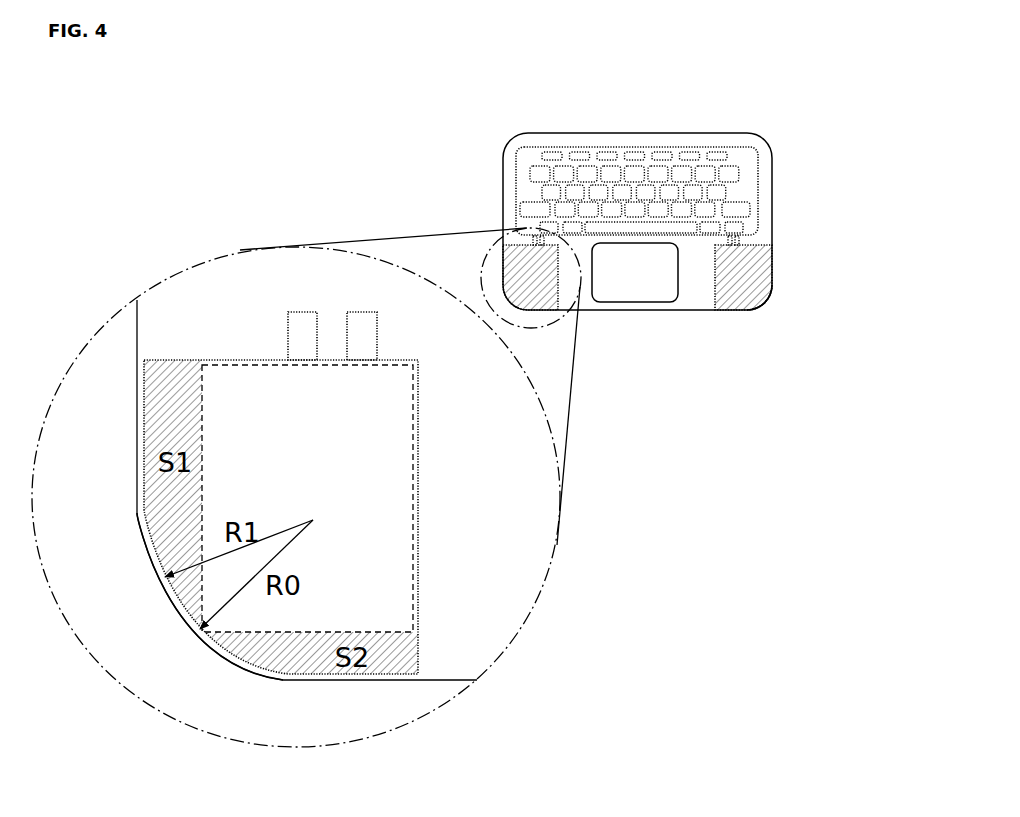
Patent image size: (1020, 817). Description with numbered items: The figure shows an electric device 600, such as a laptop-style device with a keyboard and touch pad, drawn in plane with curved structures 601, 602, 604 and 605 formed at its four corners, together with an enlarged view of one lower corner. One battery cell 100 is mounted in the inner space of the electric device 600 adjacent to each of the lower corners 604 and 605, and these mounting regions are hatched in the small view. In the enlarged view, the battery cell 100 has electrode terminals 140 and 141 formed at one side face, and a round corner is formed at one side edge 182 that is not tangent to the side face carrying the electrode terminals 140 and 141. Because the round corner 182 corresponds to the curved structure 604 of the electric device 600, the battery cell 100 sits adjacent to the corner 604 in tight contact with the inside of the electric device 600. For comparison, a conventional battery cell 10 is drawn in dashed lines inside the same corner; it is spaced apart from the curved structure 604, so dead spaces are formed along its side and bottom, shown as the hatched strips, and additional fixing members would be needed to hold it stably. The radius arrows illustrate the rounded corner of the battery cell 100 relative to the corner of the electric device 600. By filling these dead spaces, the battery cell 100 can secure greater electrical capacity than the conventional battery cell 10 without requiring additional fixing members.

The electric device 600 is at (488, 149).
The curved structure 601 is at (507, 138).
The curved structure 602 is at (767, 138).
The curved structure 604 is at (513, 308).
The curved structure 605 is at (770, 308).
The battery cell 100 is at (168, 350).
The conventional battery cell 10 is at (370, 516).
The electrode terminal 140 is at (367, 315).
The electrode terminal 141 is at (302, 315).
The round corner 182 is at (165, 593).